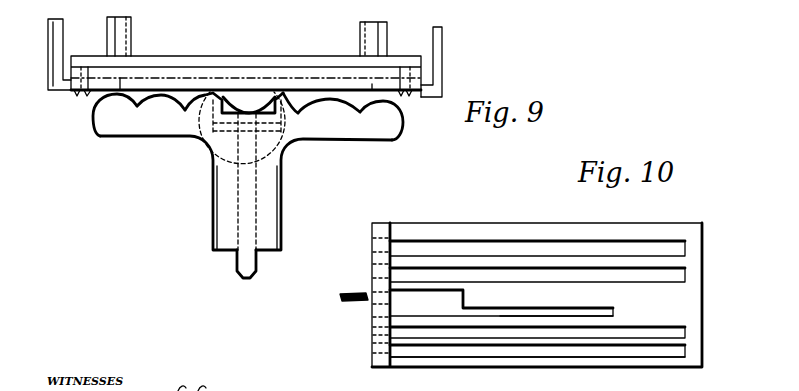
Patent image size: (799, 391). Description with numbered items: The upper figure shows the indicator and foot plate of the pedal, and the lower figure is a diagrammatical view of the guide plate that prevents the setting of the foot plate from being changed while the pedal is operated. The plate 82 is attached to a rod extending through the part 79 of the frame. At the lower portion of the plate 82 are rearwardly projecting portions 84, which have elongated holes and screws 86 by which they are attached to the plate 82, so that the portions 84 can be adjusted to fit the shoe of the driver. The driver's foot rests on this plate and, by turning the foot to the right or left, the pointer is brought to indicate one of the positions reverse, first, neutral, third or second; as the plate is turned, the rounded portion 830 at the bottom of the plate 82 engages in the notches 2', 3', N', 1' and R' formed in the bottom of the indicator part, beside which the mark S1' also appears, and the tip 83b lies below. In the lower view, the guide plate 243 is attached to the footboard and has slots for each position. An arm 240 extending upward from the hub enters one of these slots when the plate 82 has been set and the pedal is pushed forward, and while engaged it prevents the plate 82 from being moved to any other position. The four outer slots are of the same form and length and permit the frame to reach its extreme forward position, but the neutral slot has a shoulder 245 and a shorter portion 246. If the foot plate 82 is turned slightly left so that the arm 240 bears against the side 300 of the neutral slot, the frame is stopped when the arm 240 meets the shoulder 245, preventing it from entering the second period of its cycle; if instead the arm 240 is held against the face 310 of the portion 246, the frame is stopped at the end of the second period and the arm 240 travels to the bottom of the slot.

In FIG. 9, the rearwardly projecting portions 84 is at (247, 58).
In FIG. 9, the plate 82 is at (223, 62).
In FIG. 9, the rounded portion 830 is at (247, 111).
In FIG. 9, the screws 86 is at (405, 98).
In FIG. 9, the notch 2' is at (115, 131).
In FIG. 9, the notch 3' is at (161, 132).
In FIG. 9, the notch N' is at (232, 131).
In FIG. 9, the notch 1' is at (299, 134).
In FIG. 9, the type element lobe S1' is at (329, 138).
In FIG. 9, the notch R' is at (381, 140).
In FIG. 9, the part of the frame 79 is at (291, 214).
In FIG. 9, the stem tip 83b is at (258, 268).
In FIG. 10, the guide plate 243 is at (703, 248).
In FIG. 10, the side of the slot 300 is at (433, 291).
In FIG. 10, the shoulder 245 is at (466, 307).
In FIG. 10, the face 310 is at (542, 321).
In FIG. 10, the portion of the slot 246 is at (527, 314).
In FIG. 10, the arm 240 is at (338, 296).